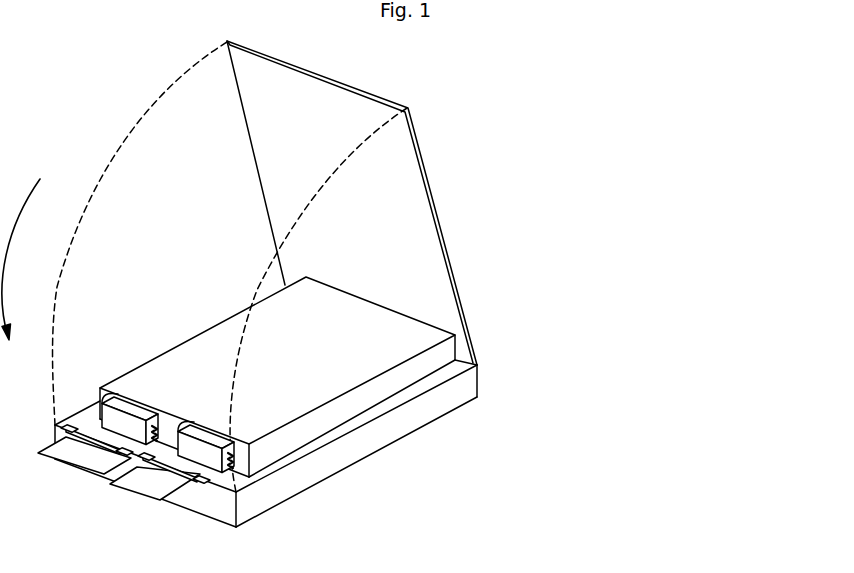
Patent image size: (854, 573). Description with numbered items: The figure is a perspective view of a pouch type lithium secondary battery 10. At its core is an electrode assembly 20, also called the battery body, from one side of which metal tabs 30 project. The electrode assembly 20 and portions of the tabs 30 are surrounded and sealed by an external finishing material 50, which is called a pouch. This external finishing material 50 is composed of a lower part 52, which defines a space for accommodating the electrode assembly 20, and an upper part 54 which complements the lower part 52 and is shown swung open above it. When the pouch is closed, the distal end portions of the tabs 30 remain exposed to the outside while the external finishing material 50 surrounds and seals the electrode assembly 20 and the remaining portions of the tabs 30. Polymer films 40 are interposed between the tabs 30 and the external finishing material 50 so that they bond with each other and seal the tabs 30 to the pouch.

The lithium secondary battery 10 is at (316, 305).
The electrode assembly 20 is at (329, 422).
The metal tabs 30 is at (137, 486).
The polymer films 40 is at (192, 476).
The external finishing material 50 is at (316, 284).
The lower part 52 is at (460, 387).
The upper part 54 is at (570, 348).